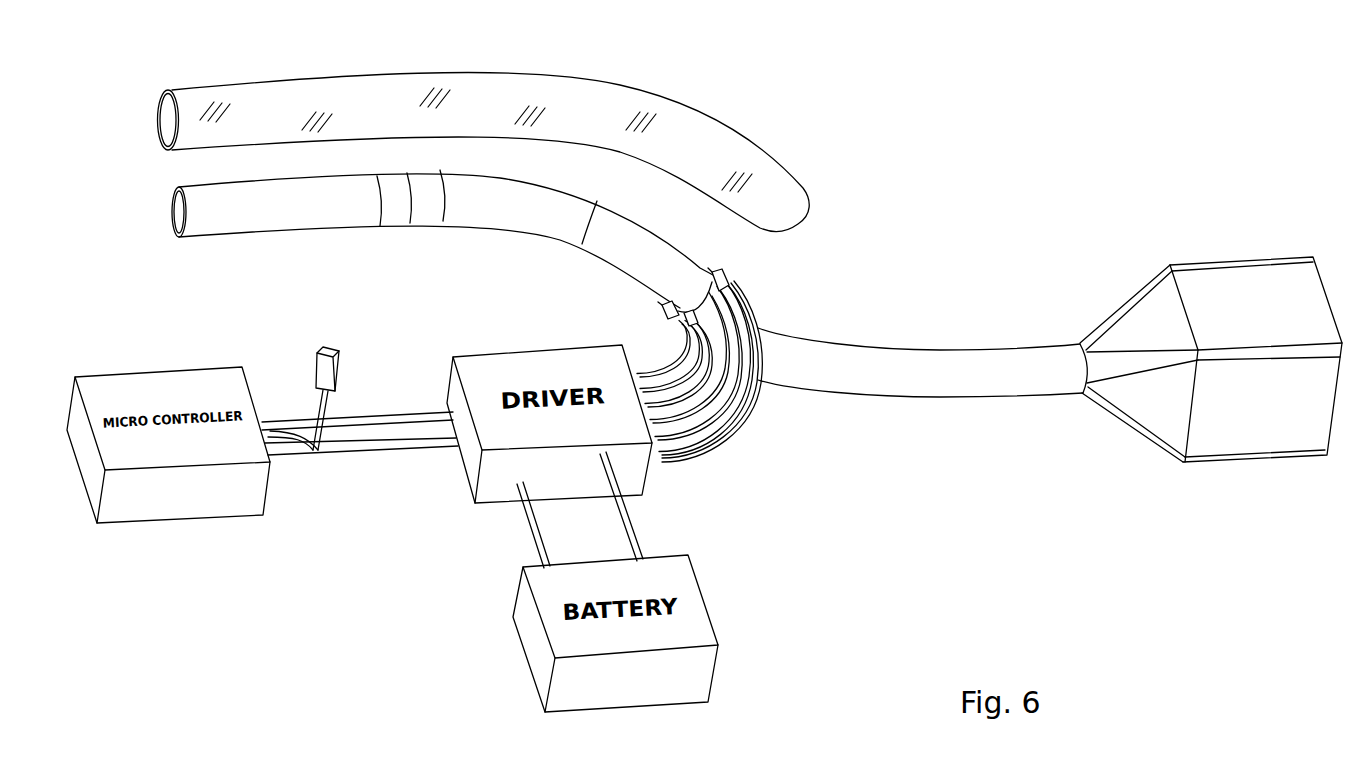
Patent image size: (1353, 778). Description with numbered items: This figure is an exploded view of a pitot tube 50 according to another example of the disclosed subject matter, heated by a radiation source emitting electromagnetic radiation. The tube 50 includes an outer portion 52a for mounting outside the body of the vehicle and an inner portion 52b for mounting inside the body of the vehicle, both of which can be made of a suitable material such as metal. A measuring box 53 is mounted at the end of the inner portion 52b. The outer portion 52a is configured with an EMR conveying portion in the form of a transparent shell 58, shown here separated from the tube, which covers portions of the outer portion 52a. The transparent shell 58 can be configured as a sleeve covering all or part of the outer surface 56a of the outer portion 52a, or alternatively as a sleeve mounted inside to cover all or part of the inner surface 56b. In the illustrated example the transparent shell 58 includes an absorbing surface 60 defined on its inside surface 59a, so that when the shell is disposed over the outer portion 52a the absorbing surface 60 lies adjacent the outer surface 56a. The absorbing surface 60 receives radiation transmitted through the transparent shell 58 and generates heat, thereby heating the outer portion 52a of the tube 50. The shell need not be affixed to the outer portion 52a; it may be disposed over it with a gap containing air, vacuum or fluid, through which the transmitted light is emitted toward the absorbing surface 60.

The pitot tube 50 is at (957, 192).
The outer portion 52a is at (512, 208).
The inner portion 52b is at (915, 387).
The measuring box 53 is at (1208, 300).
The outer surface 56a is at (298, 233).
The inner surface 56b is at (178, 218).
The transparent shell 58 is at (600, 97).
The inside surface 59a is at (165, 125).
The absorbing surface 60 is at (172, 110).